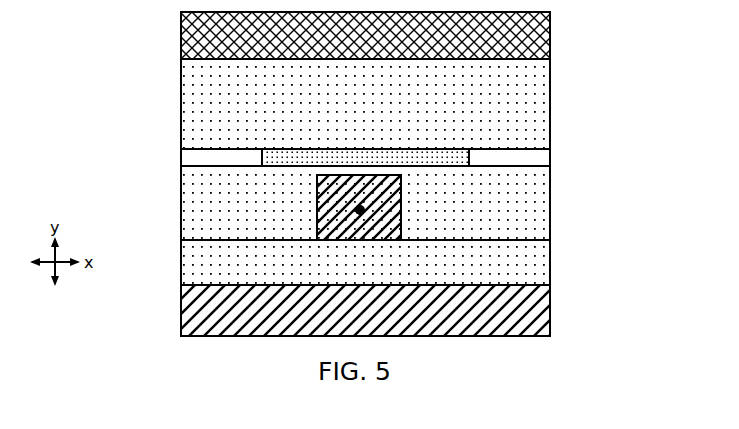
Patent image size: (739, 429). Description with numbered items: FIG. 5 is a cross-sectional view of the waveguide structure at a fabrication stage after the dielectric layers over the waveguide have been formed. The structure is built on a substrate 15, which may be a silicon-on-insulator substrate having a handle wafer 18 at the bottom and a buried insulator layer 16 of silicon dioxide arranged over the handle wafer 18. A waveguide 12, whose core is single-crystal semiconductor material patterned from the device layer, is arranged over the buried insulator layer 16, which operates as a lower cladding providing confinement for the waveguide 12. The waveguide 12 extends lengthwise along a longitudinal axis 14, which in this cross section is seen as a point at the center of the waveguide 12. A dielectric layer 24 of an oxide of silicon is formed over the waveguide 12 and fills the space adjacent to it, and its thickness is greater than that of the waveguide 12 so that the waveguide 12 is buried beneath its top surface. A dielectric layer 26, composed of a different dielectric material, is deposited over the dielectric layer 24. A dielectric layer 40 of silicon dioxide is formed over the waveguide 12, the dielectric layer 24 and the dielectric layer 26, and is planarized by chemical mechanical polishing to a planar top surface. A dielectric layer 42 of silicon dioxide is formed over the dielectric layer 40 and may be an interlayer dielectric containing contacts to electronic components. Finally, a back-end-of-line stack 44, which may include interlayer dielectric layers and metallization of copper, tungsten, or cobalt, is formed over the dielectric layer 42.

The substrate 15 is at (553, 299).
The back-end-of-line stack 44 is at (536, 38).
The dielectric layer 42 is at (196, 87).
The dielectric layer 26 is at (260, 156).
The dielectric layer 40 is at (536, 154).
The dielectric layer 24 is at (196, 210).
The waveguide 12 is at (380, 192).
The longitudinal axis 14 is at (365, 211).
The buried insulator layer 16 is at (196, 262).
The handle wafer 18 is at (196, 316).